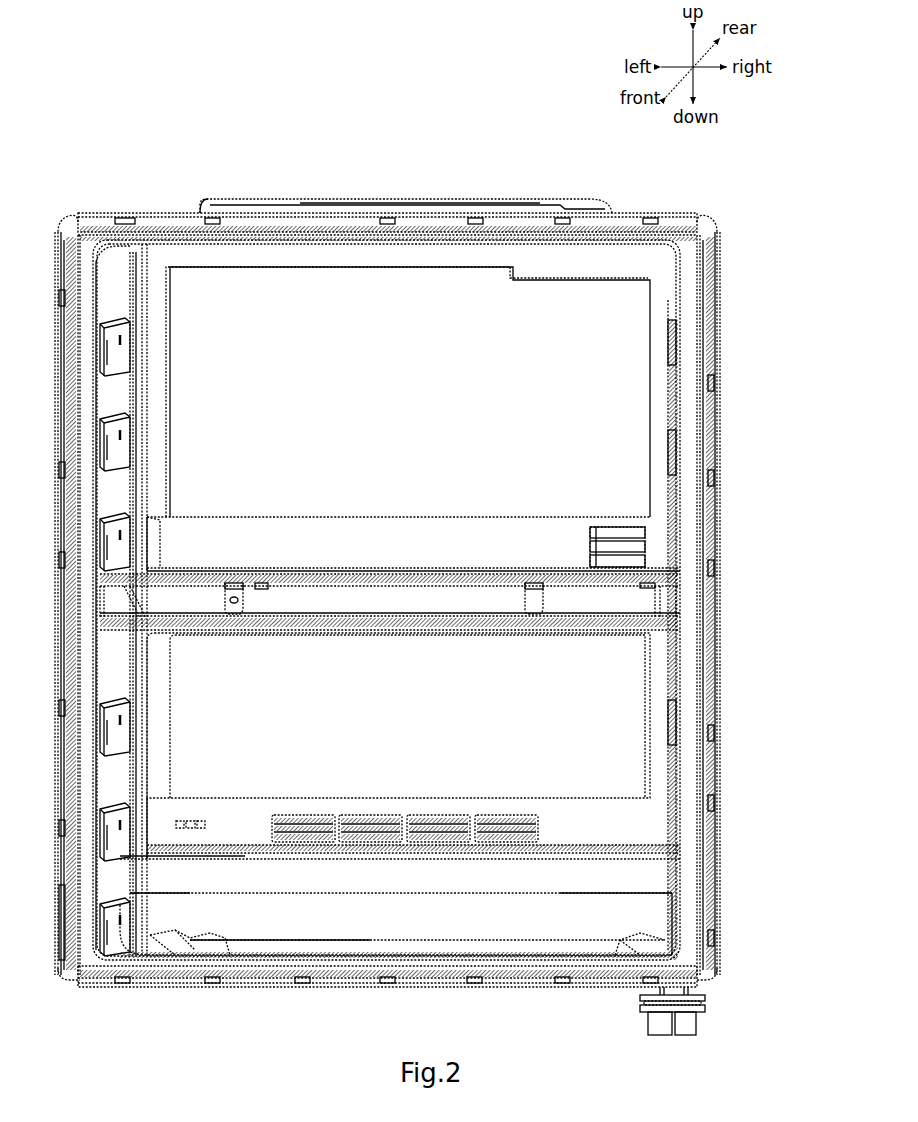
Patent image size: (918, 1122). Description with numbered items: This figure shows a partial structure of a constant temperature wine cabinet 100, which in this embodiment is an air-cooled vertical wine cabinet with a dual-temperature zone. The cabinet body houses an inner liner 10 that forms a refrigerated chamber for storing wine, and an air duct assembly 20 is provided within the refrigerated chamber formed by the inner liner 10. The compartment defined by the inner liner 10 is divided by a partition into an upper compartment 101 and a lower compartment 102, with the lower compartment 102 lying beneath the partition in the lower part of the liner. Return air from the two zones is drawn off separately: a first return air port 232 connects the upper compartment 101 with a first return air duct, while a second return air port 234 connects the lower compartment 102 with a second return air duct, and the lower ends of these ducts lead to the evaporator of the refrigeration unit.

The constant temperature wine cabinet 100 is at (390, 182).
The inner liner 10 is at (624, 222).
The air duct assembly 20 is at (657, 344).
The upper compartment 101 is at (556, 444).
The lower compartment 102 is at (575, 717).
The first return air port 232 is at (642, 534).
The second return air port 234 is at (545, 833).